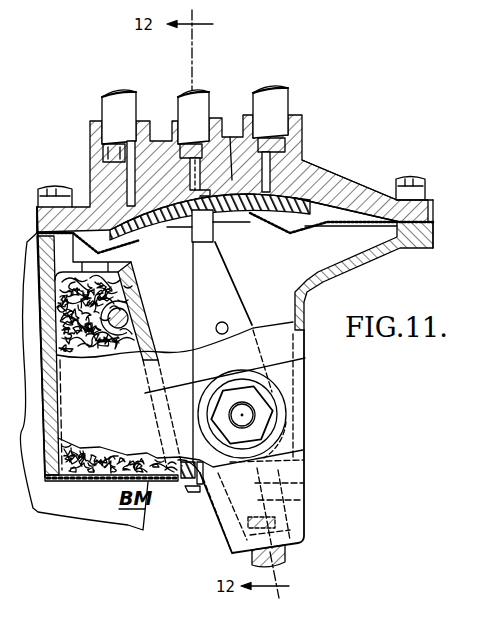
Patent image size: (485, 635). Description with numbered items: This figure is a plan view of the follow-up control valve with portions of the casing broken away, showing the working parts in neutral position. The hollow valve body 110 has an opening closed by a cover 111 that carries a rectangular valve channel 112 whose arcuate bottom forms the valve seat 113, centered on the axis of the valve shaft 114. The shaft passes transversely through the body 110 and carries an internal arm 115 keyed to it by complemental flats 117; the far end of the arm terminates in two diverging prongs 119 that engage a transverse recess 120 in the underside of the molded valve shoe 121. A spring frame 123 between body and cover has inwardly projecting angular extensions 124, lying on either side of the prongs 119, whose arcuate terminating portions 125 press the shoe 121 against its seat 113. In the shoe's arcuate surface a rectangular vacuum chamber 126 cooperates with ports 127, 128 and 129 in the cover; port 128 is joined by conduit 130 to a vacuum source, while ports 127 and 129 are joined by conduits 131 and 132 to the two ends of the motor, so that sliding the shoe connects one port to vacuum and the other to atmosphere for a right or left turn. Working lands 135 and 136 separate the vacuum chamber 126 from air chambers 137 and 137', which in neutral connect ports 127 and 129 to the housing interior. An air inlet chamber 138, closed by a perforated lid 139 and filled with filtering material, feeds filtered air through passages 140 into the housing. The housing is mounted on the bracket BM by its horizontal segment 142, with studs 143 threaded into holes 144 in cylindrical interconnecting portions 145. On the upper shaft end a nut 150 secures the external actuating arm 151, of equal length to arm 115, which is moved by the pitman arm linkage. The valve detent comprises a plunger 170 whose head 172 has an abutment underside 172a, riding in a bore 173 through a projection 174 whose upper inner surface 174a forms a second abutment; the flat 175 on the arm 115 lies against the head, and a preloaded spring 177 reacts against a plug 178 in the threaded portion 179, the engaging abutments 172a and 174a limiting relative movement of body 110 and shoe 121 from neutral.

The valve body 110 is at (298, 420).
The cover 111 is at (345, 182).
The valve guideway or channel 112 is at (340, 187).
The valve seat 113 is at (353, 197).
The valve shaft 114 is at (244, 412).
The arm 115 is at (234, 316).
The complemental flats 117 is at (272, 398).
The diverging prongs or extensions 119 is at (215, 260).
The transverse recess 120 is at (192, 240).
The movable valve element or shoe 121 is at (280, 211).
The rectangular frame or web 123 is at (343, 228).
The angular extensions 124 is at (124, 245).
The arcuate terminating portions 125 is at (250, 222).
The vacuum recess or chamber 126 is at (230, 137).
The port 127 is at (92, 138).
The port 128 is at (178, 142).
The port 129 is at (300, 132).
The conduit means 130 is at (190, 110).
The conduit means 131 is at (102, 110).
The conduit means 132 is at (290, 97).
The working land 135 is at (140, 190).
The working land 136 is at (300, 155).
The air chamber 137 is at (225, 173).
The air chamber 137' is at (347, 181).
The air inlet chamber 138 is at (66, 482).
The perforated lid 139 is at (106, 482).
The passages 140 is at (125, 272).
The horizontal segment 142 is at (136, 530).
The studs 143 is at (134, 318).
The spaced holes 144 is at (141, 299).
The cylindrical interconnecting portions 145 is at (131, 328).
The nut 150 is at (277, 409).
The external actuating arm 151 is at (145, 405).
The movable plunger or detent 170 is at (304, 486).
The rectangular-shaped head 172 is at (304, 455).
The abutment portion 172a is at (304, 470).
The cylindrical bore 173 is at (304, 502).
The projection 174 is at (304, 519).
The upper inner surface 174a is at (212, 500).
The flat 175 is at (306, 440).
The spring 177 is at (228, 541).
The plug 178 is at (287, 549).
The threaded portion 179 is at (304, 531).